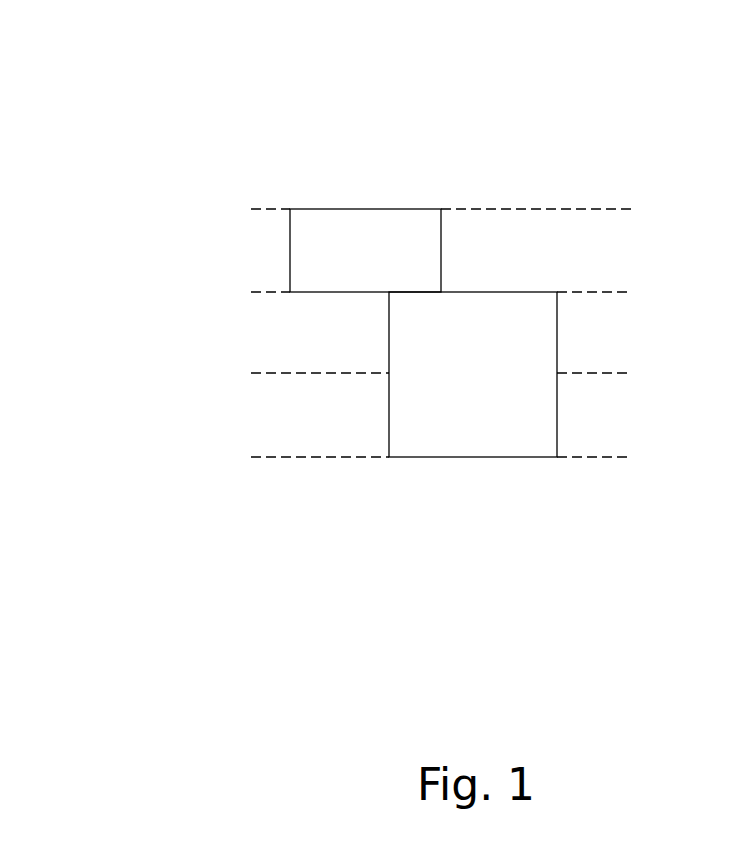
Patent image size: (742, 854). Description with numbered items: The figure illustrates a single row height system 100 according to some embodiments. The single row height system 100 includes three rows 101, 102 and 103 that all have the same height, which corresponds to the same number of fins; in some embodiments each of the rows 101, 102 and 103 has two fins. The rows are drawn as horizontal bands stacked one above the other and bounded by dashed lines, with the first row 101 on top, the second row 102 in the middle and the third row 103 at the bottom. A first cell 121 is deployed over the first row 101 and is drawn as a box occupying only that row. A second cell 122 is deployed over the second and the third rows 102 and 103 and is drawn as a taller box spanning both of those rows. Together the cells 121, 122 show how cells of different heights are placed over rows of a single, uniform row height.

The single row height system 100 is at (129, 90).
The first row 101 is at (623, 251).
The second row 102 is at (623, 334).
The third row 103 is at (623, 417).
The first cell 121 is at (423, 218).
The second cell 122 is at (475, 443).